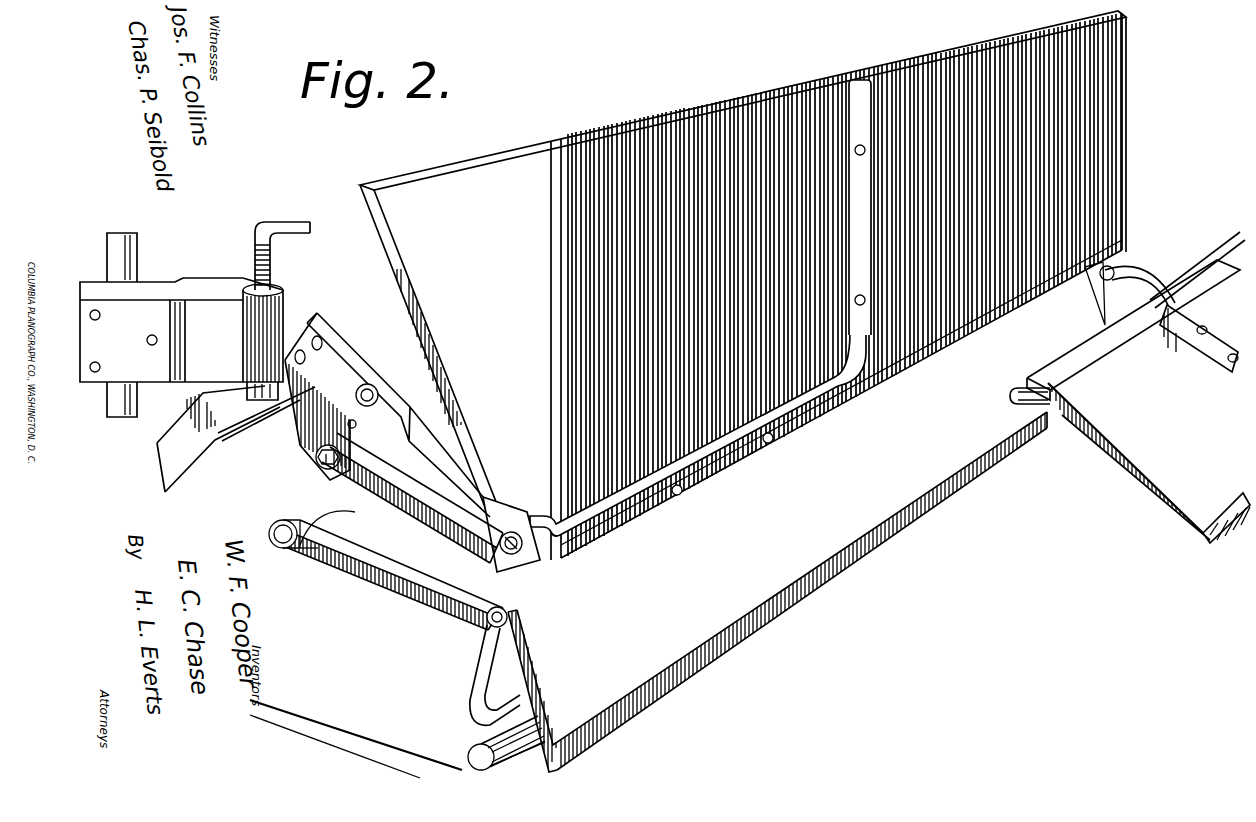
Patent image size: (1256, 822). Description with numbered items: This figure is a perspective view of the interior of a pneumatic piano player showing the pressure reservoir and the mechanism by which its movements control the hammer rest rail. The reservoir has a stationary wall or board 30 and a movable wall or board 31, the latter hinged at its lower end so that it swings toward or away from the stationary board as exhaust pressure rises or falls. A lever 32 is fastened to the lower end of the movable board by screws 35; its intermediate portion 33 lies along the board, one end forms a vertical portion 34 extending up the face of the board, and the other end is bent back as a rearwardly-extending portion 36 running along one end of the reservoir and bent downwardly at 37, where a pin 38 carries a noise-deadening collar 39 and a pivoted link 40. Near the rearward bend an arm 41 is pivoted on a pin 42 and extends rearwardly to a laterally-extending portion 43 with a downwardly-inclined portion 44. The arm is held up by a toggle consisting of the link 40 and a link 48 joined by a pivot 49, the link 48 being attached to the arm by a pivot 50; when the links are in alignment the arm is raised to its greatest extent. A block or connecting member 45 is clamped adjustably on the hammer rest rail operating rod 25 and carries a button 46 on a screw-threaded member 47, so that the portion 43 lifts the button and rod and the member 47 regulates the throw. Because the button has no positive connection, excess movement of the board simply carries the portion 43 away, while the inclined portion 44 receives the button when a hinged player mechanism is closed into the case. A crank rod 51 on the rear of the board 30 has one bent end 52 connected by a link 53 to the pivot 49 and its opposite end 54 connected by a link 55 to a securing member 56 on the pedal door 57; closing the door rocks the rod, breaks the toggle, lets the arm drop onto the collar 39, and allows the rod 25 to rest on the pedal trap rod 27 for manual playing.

The hammer rest rail operating rod 25 is at (110, 412).
The pedal trap rod 27 is at (480, 752).
The stationary wall or board of the reservoir 30 is at (777, 592).
The movable wall or board of the reservoir 31 is at (552, 434).
The lever 32 is at (768, 448).
The intermediate portion of the lever 33 is at (713, 480).
The vertical end portion of the lever 34 is at (859, 82).
The screws 35 is at (872, 310).
The rearwardly-extending portion of the lever 36 is at (496, 510).
The downwardly bent rear end 37 is at (355, 516).
The pin 38 is at (292, 550).
The collar 39 is at (317, 552).
The link 40 is at (325, 500).
The arm 41 is at (350, 360).
The pin 42 is at (516, 555).
The laterally-extending portion 43 is at (252, 415).
The downwardly-inclined portion 44 is at (185, 460).
The block or connecting member 45 is at (181, 330).
The button 46 is at (258, 382).
The screw-threaded member 47 is at (268, 270).
The link 48 is at (348, 424).
The pivot 49 is at (318, 457).
The pivot 50 is at (374, 393).
The crank rod 51 is at (478, 710).
The bent end of crank rod 52 is at (493, 653).
The link 53 is at (437, 552).
The opposite end of crank rod 54 is at (1150, 274).
The link 55 is at (1185, 265).
The securing member 56 is at (1215, 340).
The pedal door 57 is at (1130, 401).